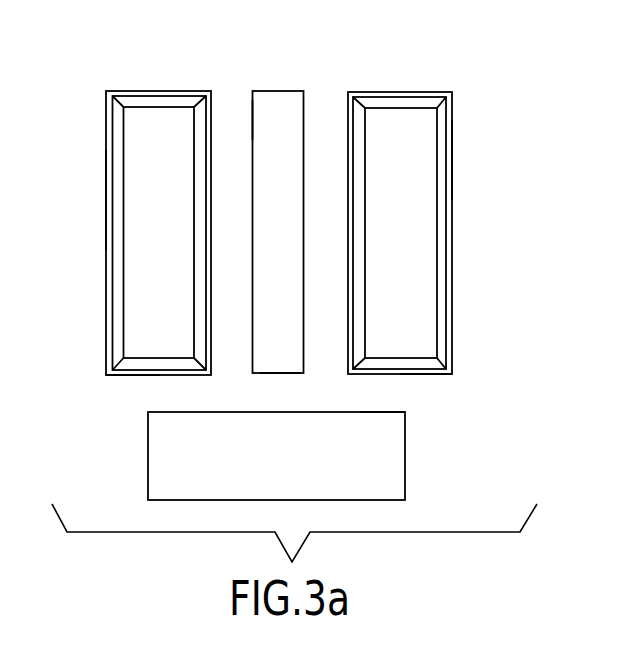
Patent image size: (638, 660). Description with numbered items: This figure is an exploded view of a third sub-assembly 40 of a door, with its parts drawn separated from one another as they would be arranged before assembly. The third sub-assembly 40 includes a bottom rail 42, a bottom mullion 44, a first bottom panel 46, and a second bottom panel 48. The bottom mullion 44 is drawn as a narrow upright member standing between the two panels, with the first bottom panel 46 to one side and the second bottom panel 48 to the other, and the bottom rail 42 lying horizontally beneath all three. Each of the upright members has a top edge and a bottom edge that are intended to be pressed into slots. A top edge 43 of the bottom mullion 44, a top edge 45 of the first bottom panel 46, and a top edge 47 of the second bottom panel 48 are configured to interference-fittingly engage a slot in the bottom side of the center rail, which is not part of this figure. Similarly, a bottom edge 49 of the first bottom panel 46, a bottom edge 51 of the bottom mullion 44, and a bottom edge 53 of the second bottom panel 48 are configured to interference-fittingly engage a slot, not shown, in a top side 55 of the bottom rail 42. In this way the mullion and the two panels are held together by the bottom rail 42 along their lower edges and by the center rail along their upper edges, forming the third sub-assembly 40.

The third sub-assembly 40 is at (528, 268).
The bottom rail 42 is at (405, 440).
The top edge of bottom mullion 43 is at (277, 90).
The bottom mullion 44 is at (252, 118).
The top edge of first bottom panel 45 is at (154, 90).
The first bottom panel 46 is at (107, 194).
The top edge of second bottom panel 47 is at (398, 89).
The second bottom panel 48 is at (453, 153).
The bottom edge of first bottom panel 49 is at (140, 377).
The bottom edge of bottom mullion 51 is at (280, 375).
The bottom edge of second bottom panel 53 is at (435, 376).
The top side of bottom rail 55 is at (404, 412).